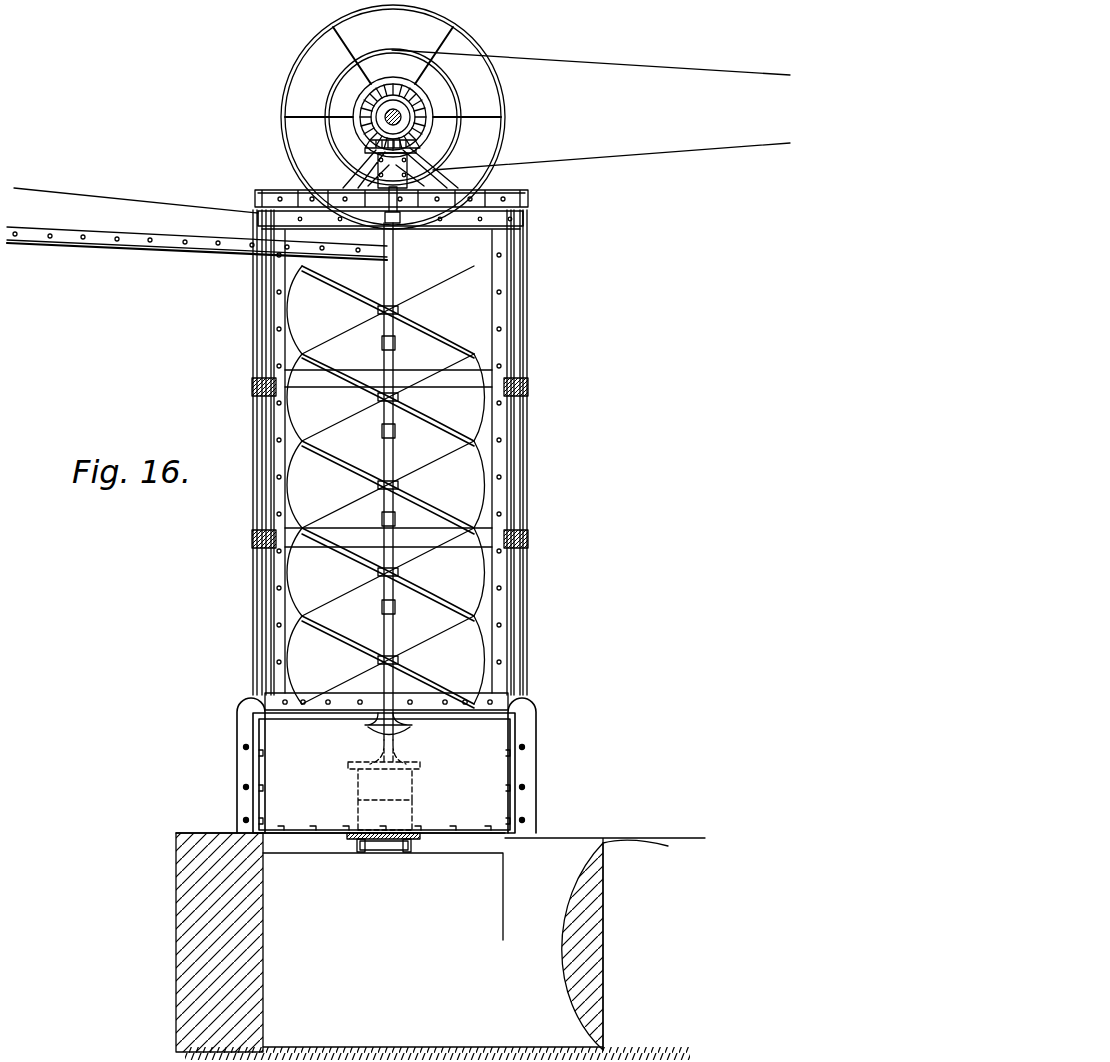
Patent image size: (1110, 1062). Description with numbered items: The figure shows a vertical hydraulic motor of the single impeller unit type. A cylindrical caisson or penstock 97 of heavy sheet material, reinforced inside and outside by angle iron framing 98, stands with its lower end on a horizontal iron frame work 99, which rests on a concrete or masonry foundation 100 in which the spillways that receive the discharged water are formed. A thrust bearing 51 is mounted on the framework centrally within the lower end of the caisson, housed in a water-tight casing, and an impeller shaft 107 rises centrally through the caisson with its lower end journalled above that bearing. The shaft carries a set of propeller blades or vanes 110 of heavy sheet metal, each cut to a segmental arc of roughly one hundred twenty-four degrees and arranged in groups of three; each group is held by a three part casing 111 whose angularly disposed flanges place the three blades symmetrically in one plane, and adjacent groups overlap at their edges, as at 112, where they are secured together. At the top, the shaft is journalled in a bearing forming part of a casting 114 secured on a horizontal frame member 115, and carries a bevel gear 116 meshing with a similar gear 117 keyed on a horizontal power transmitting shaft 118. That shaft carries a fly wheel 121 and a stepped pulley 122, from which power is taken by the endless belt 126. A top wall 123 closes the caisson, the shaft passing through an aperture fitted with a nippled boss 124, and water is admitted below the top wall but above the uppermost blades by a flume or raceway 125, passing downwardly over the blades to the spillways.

The thrust bearing 51 is at (400, 792).
The cylindrical caisson or penstock 97 is at (506, 492).
The angle iron framing 98 is at (276, 626).
The horizontal iron frame work 99 is at (242, 775).
The concrete or masonry foundation 100 is at (192, 990).
The impeller shaft 107 is at (393, 288).
The propeller blades or vanes 110 is at (440, 288).
The three part casing 111 is at (386, 432).
The overlapping edge portions 112 is at (470, 430).
The bearing casting 114 is at (433, 170).
The horizontal frame member 115 is at (318, 193).
The bevel gear 116 is at (367, 143).
The bevel gear 117 is at (430, 103).
The power transmitting shaft 118 is at (405, 123).
The fly wheel 121 is at (302, 66).
The stepped pulley 122 is at (330, 100).
The top wall 123 is at (476, 231).
The nippled boss 124 is at (396, 228).
The flume or raceway 125 is at (134, 252).
The endless belt 126 is at (678, 152).